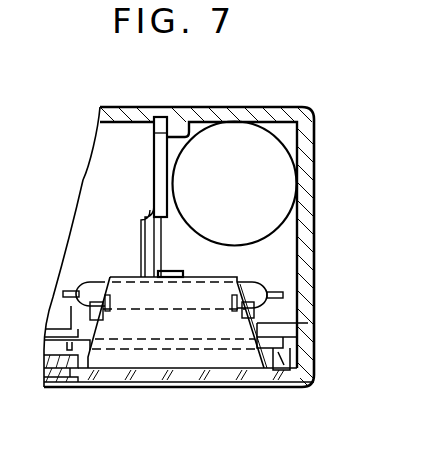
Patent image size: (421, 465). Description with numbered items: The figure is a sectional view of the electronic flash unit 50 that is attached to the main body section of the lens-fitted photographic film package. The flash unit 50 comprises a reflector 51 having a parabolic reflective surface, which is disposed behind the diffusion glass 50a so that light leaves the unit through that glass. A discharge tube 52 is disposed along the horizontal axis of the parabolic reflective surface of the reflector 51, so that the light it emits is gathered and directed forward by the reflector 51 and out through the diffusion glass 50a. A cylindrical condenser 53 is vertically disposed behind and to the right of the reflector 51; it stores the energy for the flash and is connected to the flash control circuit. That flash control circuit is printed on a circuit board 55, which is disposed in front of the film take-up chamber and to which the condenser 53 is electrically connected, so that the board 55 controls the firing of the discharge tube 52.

The electronic flash unit 50 is at (304, 101).
The diffusion glass 50a is at (152, 376).
The reflector 51 is at (228, 356).
The discharge tube 52 is at (260, 290).
The cylindrical condenser 53 is at (230, 135).
The circuit board 55 is at (62, 374).